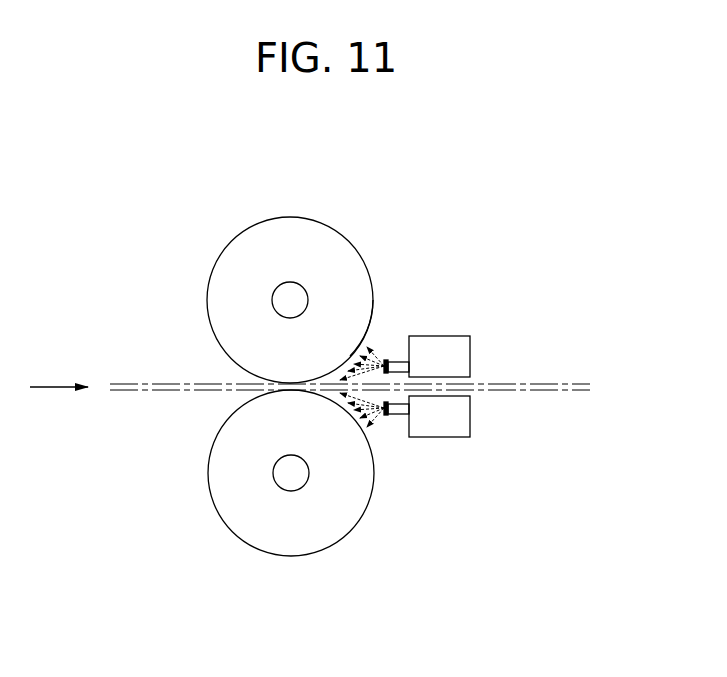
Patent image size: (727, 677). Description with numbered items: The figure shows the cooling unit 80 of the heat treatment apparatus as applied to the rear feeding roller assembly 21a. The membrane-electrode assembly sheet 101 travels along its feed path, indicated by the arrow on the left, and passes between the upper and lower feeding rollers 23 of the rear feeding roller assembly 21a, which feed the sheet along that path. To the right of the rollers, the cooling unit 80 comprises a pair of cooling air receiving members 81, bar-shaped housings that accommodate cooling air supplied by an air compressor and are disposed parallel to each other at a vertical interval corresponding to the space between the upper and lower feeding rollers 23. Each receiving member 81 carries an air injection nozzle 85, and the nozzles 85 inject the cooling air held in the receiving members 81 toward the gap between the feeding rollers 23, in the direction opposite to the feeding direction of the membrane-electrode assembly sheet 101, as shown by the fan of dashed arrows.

The feeding rollers 23 is at (214, 267).
The rear feeding roller assembly 21a is at (385, 272).
The membrane-electrode assembly sheet 101 is at (163, 392).
The cooling unit 80 is at (458, 394).
The cooling air receiving members 81 is at (470, 350).
The air injection nozzle 85 is at (395, 362).